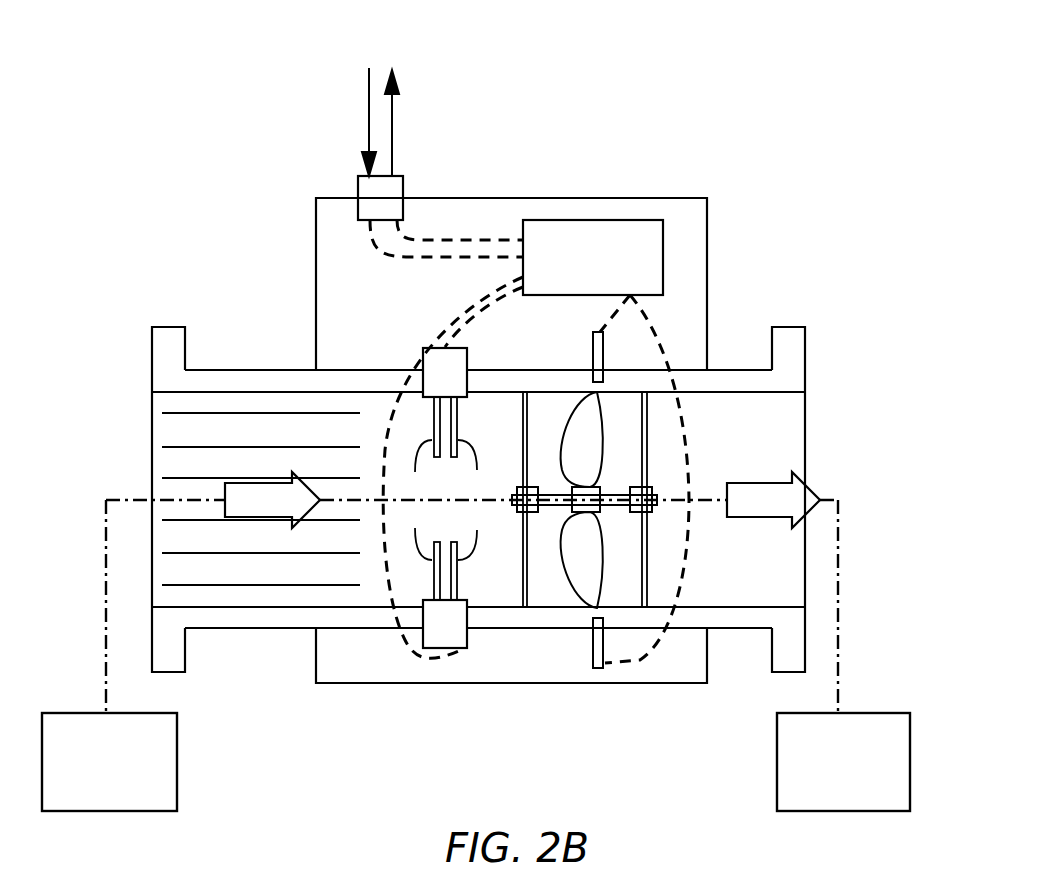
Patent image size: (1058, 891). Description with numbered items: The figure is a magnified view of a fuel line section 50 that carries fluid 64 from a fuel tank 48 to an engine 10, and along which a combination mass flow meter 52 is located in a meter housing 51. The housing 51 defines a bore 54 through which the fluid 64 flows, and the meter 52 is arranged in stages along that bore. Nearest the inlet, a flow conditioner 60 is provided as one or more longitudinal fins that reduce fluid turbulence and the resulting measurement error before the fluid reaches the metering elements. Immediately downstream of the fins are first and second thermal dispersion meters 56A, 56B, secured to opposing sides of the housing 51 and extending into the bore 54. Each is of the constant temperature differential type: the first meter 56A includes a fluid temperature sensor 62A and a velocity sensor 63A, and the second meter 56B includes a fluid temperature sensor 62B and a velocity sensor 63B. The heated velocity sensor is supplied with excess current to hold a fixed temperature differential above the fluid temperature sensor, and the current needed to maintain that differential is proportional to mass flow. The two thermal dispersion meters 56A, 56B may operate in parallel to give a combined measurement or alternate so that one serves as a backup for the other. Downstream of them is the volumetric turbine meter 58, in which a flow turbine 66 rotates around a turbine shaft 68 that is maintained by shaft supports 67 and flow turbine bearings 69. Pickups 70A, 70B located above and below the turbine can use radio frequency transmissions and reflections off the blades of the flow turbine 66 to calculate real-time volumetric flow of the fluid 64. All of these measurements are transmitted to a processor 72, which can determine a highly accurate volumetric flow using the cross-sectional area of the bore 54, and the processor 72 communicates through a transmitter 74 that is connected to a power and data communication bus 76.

The engine 10 is at (777, 763).
The fuel tank 48 is at (177, 765).
The fuel line section 50 is at (150, 420).
The meter housing 51 is at (397, 683).
The combination mass flow meter 52 is at (755, 127).
The bore 54 is at (772, 447).
The thermal dispersion meter 56A is at (445, 402).
The thermal dispersion meter 56B is at (445, 595).
The volumetric turbine meter 58 is at (542, 577).
The flow conditioner 60 is at (287, 447).
The fluid temperature sensor 62A is at (415, 467).
The fluid temperature sensor 62B is at (415, 535).
The velocity sensor 63A is at (475, 467).
The velocity sensor 63B is at (475, 535).
The fluid 64 is at (472, 592).
The flow turbine 66 is at (593, 427).
The shaft supports 67 is at (522, 548).
The turbine shaft 68 is at (613, 506).
The flow turbine bearings 69 is at (650, 490).
The pickup 70A is at (592, 357).
The pickup 70B is at (593, 660).
The processor 72 is at (516, 257).
The transmitter 74 is at (398, 185).
The communication bus 76 is at (355, 103).